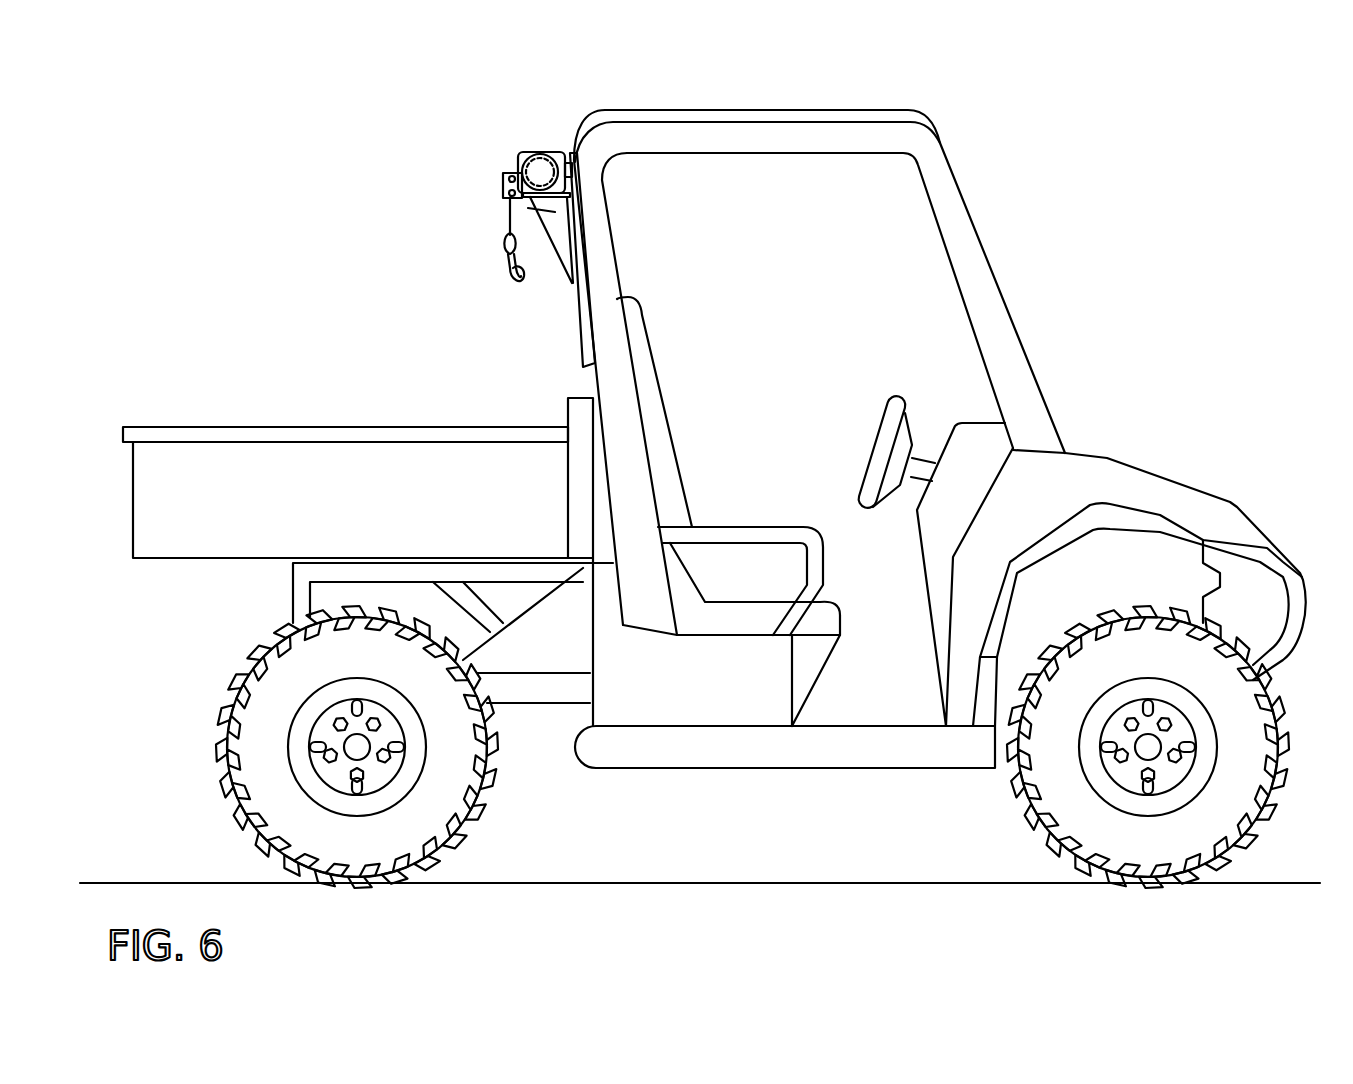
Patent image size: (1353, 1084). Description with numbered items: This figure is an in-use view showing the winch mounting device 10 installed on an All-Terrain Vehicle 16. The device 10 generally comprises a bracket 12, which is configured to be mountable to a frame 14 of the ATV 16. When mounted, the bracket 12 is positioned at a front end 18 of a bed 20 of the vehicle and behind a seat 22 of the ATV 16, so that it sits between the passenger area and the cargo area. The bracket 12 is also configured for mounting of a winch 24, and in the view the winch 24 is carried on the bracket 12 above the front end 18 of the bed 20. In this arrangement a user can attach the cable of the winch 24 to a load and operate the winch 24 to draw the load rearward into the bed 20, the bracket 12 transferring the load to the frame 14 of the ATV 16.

The winch mounting device 10 is at (392, 158).
The bracket 12 is at (575, 245).
The frame 14 is at (950, 196).
The All-Terrain Vehicle 16 is at (1110, 458).
The front end 18 is at (567, 480).
The bed 20 is at (345, 545).
The seat 22 is at (653, 386).
The winch 24 is at (540, 172).